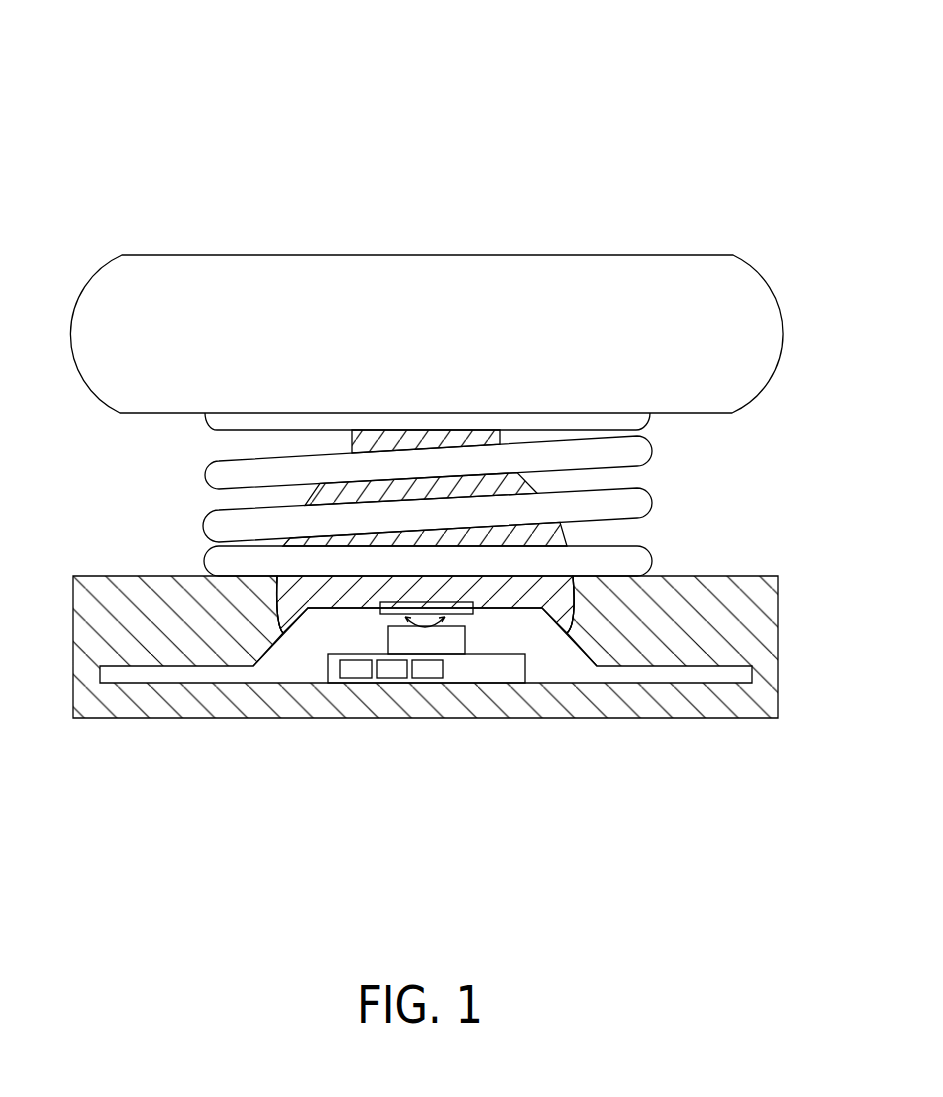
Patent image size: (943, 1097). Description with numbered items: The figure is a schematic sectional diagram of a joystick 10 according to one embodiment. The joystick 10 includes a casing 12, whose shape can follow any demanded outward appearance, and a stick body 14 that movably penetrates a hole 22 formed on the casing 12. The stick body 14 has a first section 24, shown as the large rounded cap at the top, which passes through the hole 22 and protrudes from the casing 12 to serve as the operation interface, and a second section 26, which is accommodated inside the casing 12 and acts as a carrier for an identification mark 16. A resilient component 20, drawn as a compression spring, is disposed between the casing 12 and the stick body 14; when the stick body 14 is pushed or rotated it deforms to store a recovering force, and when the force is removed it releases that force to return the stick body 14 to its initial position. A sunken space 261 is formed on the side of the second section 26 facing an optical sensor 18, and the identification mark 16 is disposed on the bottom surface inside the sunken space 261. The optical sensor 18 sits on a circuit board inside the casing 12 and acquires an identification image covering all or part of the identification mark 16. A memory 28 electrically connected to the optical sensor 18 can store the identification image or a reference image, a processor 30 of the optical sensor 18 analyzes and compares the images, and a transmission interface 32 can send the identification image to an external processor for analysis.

The joystick 10 is at (665, 130).
The casing 12 is at (690, 695).
The stick body 14 is at (426, 520).
The identification mark 16 is at (397, 605).
The optical sensor 18 is at (452, 647).
The resilient component 20 is at (217, 472).
The hole 22 is at (277, 603).
The first section 24 is at (475, 338).
The second section 26 is at (530, 592).
The sunken space 261 is at (317, 610).
The memory 28 is at (358, 672).
The processor 30 is at (390, 672).
The transmission interface 32 is at (425, 672).